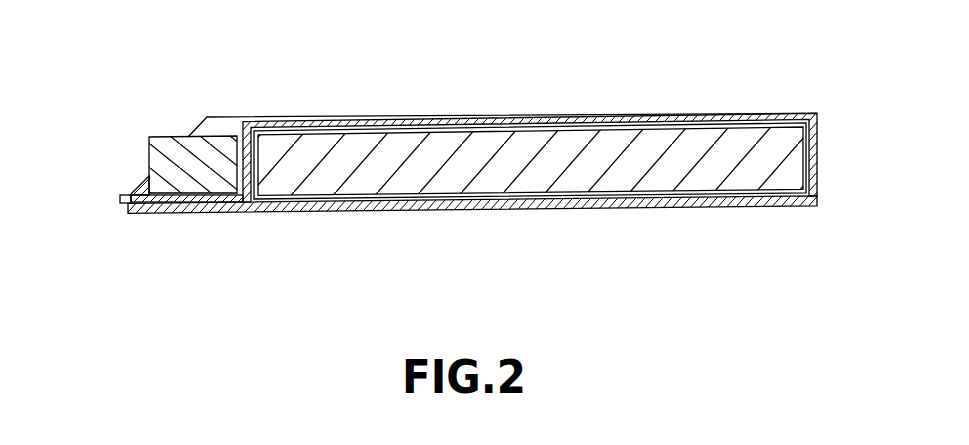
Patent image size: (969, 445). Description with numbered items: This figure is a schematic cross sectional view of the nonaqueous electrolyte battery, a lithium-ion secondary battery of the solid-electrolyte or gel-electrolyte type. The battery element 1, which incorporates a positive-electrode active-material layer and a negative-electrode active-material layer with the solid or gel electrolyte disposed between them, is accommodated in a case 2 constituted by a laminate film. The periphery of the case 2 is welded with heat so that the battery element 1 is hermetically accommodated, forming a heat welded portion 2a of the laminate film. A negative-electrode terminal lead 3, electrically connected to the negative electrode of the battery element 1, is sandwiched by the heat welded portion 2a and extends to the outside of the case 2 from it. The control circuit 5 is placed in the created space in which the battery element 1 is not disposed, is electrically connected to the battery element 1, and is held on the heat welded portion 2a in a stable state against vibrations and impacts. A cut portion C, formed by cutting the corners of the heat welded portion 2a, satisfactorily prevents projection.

The battery element 1 is at (553, 152).
The case 2 is at (817, 152).
The heat welded portion 2a is at (190, 213).
The negative-electrode terminal lead 3 is at (120, 200).
The control circuit 5 is at (161, 137).
The cut portion C is at (188, 137).